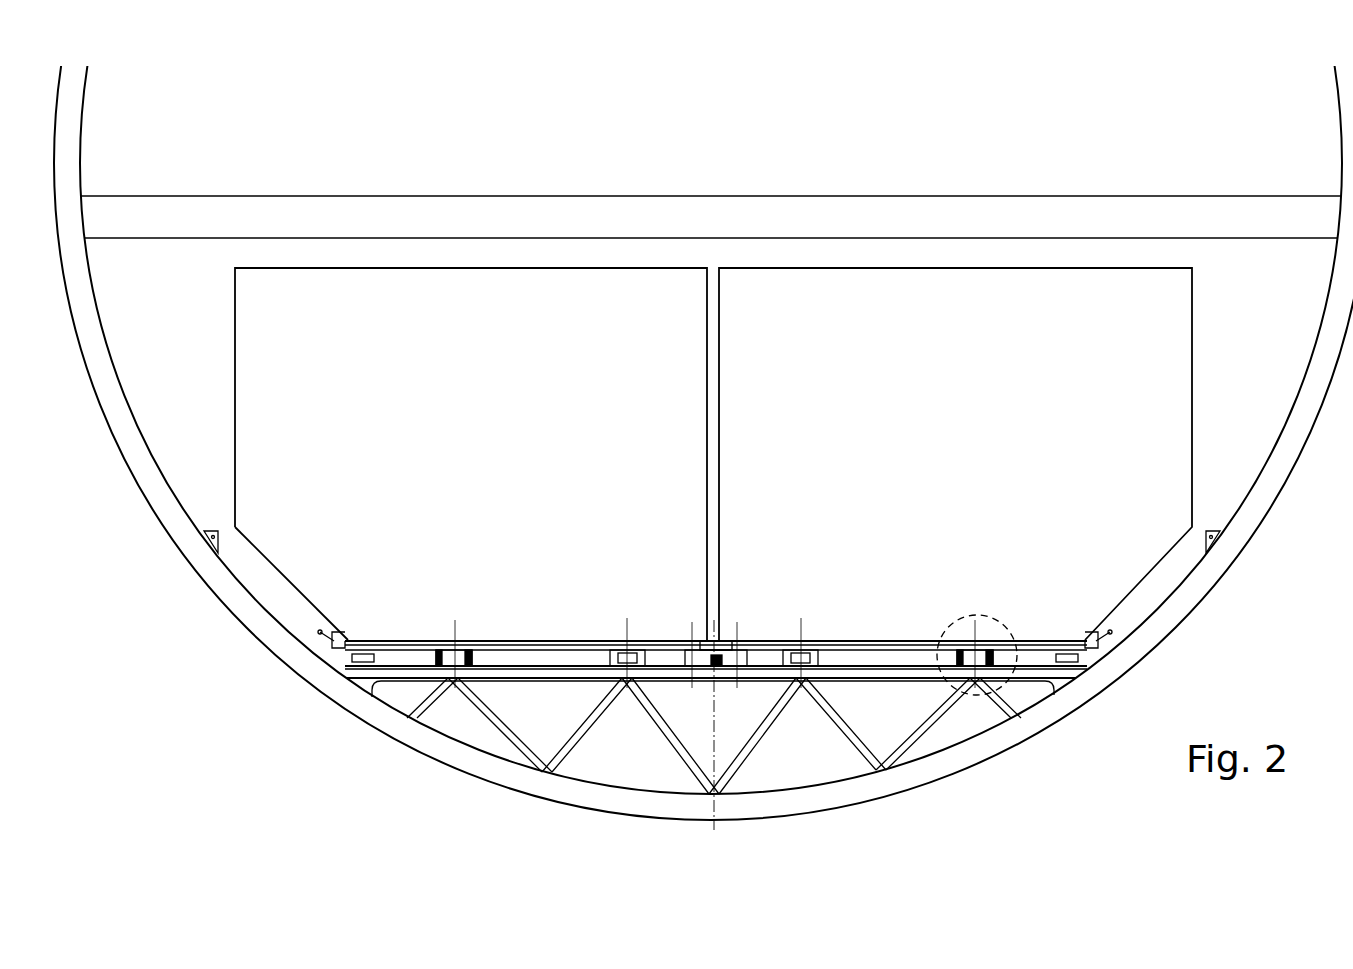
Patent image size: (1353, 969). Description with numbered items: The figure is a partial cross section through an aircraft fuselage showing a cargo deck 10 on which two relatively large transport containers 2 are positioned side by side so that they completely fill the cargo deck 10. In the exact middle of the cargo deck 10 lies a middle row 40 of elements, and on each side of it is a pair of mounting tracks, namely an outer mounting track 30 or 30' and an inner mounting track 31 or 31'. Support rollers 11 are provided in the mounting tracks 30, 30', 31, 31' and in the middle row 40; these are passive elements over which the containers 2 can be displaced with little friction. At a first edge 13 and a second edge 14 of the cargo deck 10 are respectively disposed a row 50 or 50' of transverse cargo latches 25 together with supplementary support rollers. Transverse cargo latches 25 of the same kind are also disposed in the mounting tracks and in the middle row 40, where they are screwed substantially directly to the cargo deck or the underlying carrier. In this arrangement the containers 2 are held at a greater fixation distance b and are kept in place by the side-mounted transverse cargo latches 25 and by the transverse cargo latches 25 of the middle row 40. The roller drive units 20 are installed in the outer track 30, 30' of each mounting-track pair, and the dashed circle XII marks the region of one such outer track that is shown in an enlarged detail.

The transport container 2 is at (495, 430).
The cargo deck 10 is at (711, 732).
The support roller 11 is at (636, 660).
The first edge 13 is at (1090, 672).
The second edge 14 is at (336, 655).
The roller drive unit 20 is at (456, 652).
The transverse cargo latch 25 is at (317, 626).
The outer mounting track 30 is at (948, 720).
The outer mounting track 30' is at (479, 724).
The inner mounting track 31 is at (797, 734).
The inner mounting track 31' is at (630, 734).
The middle row 40 is at (713, 684).
The row of transverse cargo latches and supplementary support rollers 50 is at (1051, 716).
The row of transverse cargo latches and supplementary support rollers 50' is at (401, 633).
The detail XII is at (982, 616).
The fixation distance b is at (1080, 590).